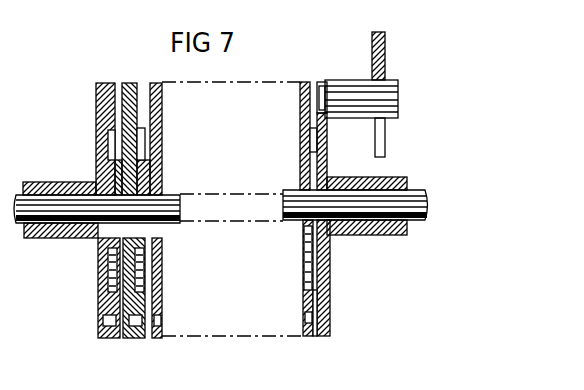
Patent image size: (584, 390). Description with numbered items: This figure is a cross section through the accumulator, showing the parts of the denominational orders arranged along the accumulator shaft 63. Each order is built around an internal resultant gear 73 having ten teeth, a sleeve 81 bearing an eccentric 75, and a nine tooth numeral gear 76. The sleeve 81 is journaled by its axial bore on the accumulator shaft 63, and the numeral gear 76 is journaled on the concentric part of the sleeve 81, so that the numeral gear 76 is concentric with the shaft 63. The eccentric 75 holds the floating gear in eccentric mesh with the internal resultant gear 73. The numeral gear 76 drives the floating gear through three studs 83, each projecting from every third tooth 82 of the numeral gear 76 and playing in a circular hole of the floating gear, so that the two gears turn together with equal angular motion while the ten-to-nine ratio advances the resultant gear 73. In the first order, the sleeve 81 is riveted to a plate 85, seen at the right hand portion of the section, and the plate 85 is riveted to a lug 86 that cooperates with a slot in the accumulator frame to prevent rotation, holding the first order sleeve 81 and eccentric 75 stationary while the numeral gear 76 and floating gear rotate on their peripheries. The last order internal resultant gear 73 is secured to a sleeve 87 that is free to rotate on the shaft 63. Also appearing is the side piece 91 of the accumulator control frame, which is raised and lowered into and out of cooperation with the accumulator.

The accumulator shaft 63 is at (50, 207).
The internal resultant gear 73 is at (134, 84).
The eccentric 75 is at (304, 187).
The numeral gear 76 is at (328, 252).
The sleeve 81 is at (158, 192).
The tooth 82 is at (144, 135).
The stud 83 is at (110, 270).
The plate 85 is at (326, 312).
The lug 86 is at (352, 92).
The sleeve 87 is at (40, 240).
The side piece 91 is at (381, 34).